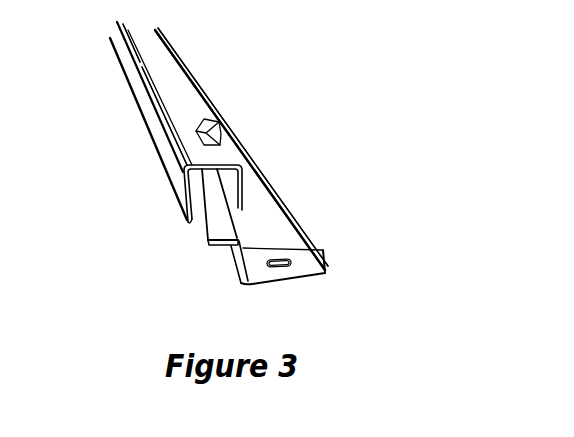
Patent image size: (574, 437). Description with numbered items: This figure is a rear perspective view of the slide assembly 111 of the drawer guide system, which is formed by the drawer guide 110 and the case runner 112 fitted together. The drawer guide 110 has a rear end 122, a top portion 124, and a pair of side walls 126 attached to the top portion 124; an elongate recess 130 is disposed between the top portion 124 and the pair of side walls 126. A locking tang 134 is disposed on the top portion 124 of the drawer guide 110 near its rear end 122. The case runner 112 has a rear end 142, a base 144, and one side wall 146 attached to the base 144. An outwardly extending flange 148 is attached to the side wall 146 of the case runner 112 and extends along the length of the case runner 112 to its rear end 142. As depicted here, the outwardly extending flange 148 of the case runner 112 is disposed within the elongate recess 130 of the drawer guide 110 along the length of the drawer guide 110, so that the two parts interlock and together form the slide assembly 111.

The drawer guide 110 is at (177, 96).
The slide assembly 111 is at (318, 112).
The case runner 112 is at (284, 239).
The rear end 122 is at (187, 229).
The top portion 124 is at (184, 125).
The pair of side walls 126 is at (185, 177).
The elongate recess 130 is at (232, 193).
The locking tang 134 is at (216, 127).
The rear end 142 is at (322, 275).
The base 144 is at (280, 217).
The side wall 146 is at (322, 250).
The outwardly extending flange 148 is at (222, 250).